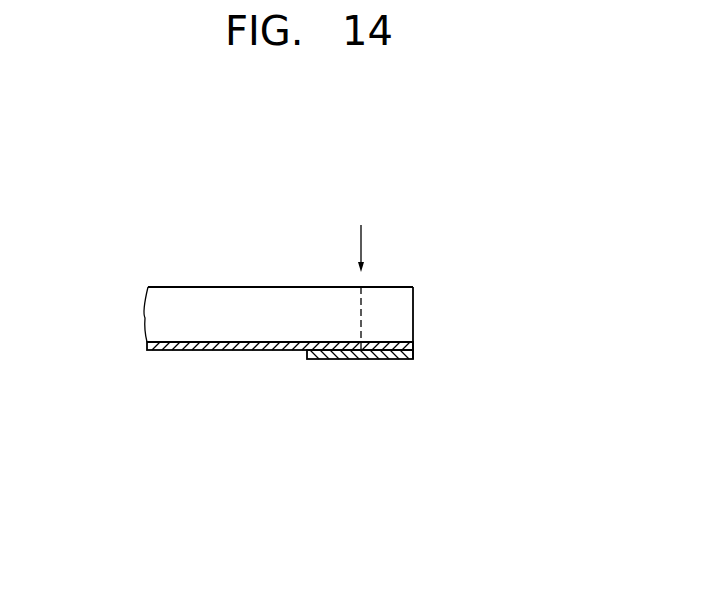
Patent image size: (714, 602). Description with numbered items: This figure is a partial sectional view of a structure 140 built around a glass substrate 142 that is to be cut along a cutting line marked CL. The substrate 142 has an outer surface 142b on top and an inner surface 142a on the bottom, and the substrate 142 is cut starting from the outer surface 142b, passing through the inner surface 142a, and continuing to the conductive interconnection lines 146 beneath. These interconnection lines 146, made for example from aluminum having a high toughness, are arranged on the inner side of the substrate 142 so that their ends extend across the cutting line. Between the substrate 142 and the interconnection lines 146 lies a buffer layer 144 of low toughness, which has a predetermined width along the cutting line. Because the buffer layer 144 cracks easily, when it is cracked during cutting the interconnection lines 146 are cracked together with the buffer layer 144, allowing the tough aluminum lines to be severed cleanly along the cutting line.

The display panel assembly 140 is at (212, 252).
The substrate 142 is at (521, 275).
The inner surface 142a is at (380, 340).
The outer surface 142b is at (389, 288).
The buffer layer 144 is at (404, 346).
The conductive interconnection lines 146 is at (413, 359).